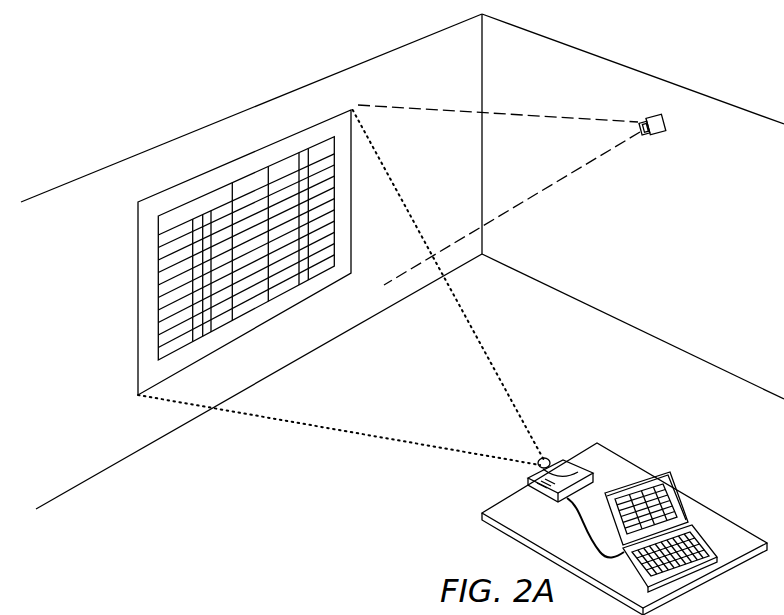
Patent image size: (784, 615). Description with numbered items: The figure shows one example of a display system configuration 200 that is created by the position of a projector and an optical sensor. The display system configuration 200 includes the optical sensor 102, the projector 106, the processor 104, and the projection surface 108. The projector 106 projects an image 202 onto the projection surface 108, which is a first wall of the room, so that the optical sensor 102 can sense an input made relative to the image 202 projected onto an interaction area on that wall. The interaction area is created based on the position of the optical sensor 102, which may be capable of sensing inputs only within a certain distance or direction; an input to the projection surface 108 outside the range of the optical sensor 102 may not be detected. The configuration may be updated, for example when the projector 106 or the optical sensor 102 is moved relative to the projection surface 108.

The display system configuration 200 is at (181, 80).
The projection surface 108 is at (93, 188).
The image 202 is at (160, 250).
The optical sensor 102 is at (660, 136).
The projector 106 is at (563, 458).
The processor 104 is at (698, 532).